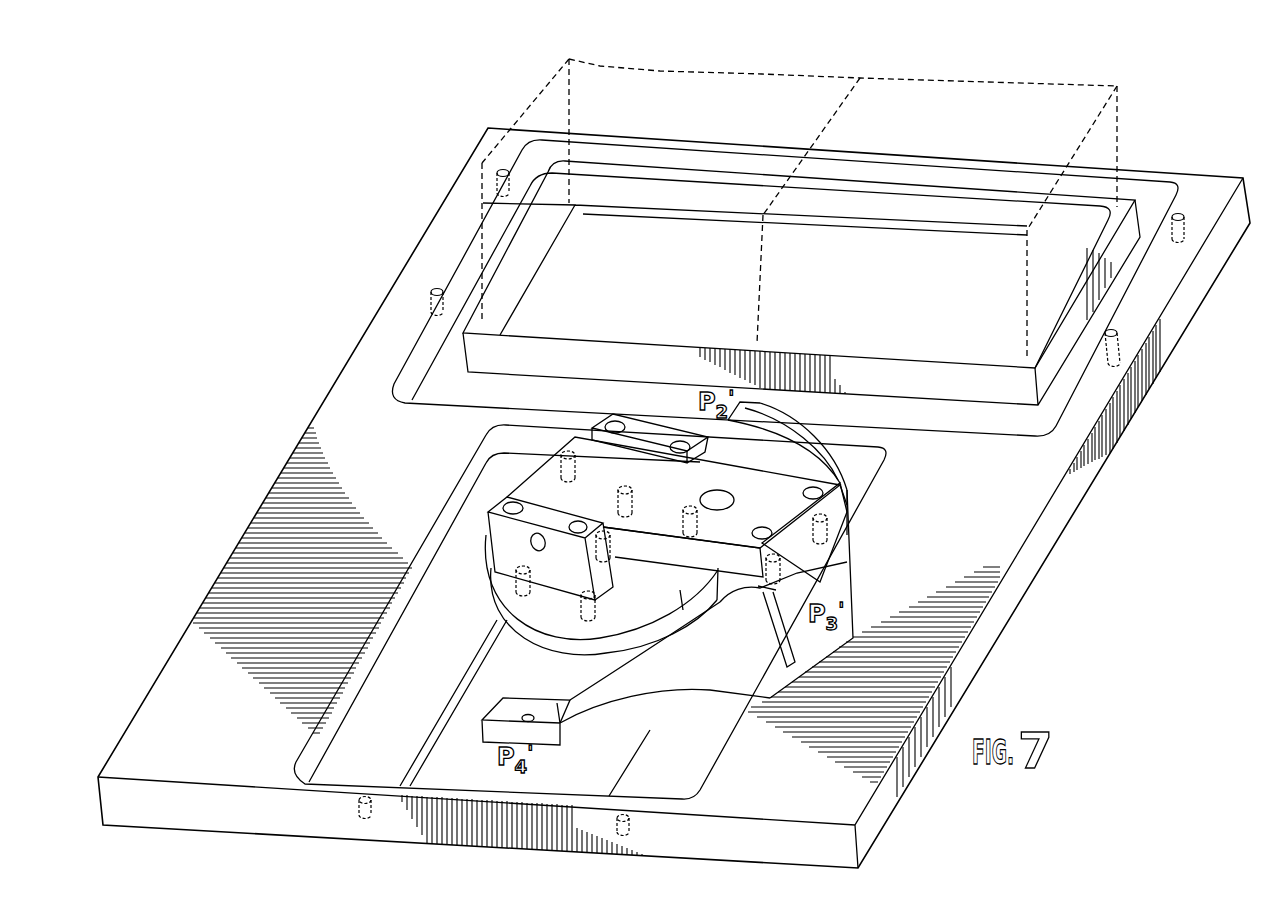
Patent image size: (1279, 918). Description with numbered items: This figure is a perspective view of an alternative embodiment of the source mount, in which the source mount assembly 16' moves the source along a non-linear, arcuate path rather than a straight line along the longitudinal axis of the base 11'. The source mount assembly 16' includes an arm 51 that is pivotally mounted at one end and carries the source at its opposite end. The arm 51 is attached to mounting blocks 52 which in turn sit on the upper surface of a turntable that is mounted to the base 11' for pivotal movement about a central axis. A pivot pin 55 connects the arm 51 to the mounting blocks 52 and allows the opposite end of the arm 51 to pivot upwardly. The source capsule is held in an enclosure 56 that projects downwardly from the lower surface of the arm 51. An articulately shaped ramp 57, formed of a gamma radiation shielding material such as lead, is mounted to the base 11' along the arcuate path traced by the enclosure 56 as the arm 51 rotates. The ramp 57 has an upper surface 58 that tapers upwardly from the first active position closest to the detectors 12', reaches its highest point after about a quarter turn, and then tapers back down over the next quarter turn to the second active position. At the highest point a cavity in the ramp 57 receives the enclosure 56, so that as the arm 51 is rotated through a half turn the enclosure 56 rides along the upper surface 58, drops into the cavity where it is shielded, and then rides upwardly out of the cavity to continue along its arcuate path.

The base 11' is at (674, 498).
The detectors 12' is at (800, 196).
The source mount assembly 16' is at (660, 568).
The arm 51 is at (677, 529).
The mounting blocks 52 is at (633, 432).
The pivot pin 55 is at (530, 548).
The enclosure 56 is at (818, 560).
The ramp 57 is at (698, 705).
The upper surface 58 is at (787, 430).